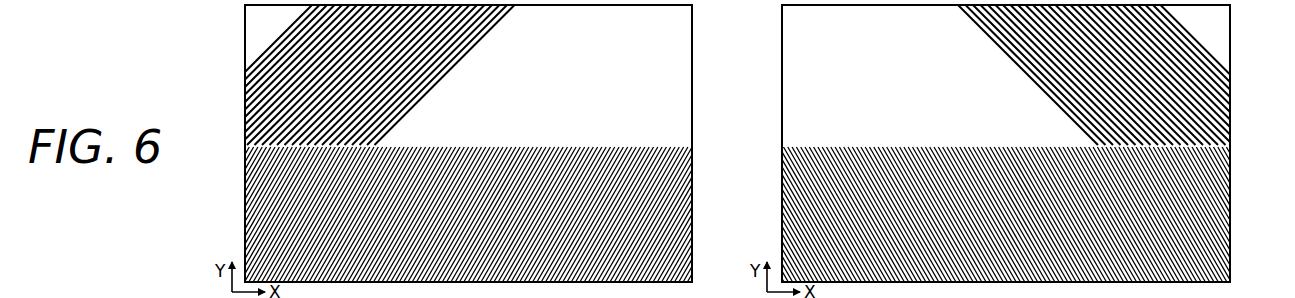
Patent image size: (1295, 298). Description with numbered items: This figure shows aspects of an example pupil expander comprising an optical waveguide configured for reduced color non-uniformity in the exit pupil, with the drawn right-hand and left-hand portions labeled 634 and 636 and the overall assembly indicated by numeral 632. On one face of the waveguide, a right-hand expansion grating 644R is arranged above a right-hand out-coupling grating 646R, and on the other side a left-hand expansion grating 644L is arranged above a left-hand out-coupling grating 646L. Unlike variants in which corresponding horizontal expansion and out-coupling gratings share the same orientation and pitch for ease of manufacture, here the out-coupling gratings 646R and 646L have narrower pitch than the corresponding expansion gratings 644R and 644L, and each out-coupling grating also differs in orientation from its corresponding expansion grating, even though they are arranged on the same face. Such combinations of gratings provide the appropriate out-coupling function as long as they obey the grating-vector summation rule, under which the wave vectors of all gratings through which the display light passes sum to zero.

The display panel / image 632 is at (236, 101).
The right-eye image region 634 is at (683, 36).
The left-eye image region 636 is at (831, 36).
The right-hand expansion grating 644R is at (453, 69).
The right-hand out-coupling grating 646R is at (575, 121).
The left-hand expansion grating 644L is at (1020, 70).
The left-hand out-coupling grating 646L is at (912, 147).